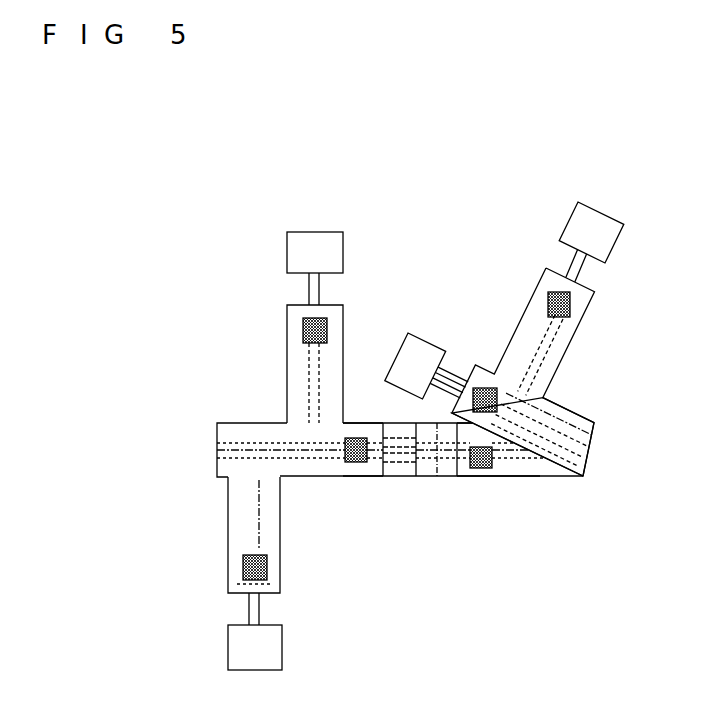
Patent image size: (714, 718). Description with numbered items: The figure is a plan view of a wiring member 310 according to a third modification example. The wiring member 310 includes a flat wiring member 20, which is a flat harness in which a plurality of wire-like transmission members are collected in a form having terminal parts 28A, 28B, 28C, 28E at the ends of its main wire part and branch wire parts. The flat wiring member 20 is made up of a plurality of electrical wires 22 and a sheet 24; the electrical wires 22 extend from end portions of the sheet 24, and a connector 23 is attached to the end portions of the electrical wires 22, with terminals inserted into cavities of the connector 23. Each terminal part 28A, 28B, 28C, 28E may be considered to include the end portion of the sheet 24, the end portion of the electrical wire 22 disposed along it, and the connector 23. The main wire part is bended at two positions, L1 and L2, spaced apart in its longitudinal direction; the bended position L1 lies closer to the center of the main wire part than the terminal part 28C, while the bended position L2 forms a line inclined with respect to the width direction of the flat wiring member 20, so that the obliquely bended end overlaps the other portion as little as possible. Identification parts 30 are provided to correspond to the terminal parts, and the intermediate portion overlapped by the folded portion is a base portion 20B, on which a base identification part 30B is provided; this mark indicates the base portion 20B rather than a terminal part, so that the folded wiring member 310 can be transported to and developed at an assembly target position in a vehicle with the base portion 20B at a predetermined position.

The wiring member 310 is at (483, 236).
The flat wiring member 20 is at (403, 477).
The base portion 20B is at (509, 477).
The electrical wire 22 is at (260, 617).
The connector 23 is at (430, 342).
The sheet 24 is at (553, 477).
The terminal part 28A is at (356, 477).
The terminal part 28B is at (343, 320).
The terminal part 28C is at (282, 573).
The terminal part 28E is at (478, 370).
The identification part 30 is at (302, 337).
The base identification part 30B is at (478, 468).
The bended position L1 is at (217, 441).
The bended position L2 is at (596, 435).